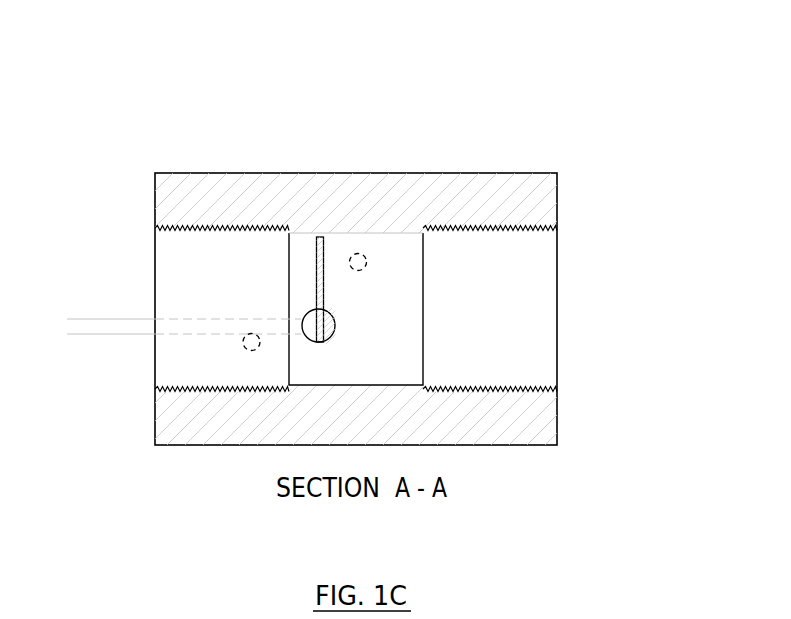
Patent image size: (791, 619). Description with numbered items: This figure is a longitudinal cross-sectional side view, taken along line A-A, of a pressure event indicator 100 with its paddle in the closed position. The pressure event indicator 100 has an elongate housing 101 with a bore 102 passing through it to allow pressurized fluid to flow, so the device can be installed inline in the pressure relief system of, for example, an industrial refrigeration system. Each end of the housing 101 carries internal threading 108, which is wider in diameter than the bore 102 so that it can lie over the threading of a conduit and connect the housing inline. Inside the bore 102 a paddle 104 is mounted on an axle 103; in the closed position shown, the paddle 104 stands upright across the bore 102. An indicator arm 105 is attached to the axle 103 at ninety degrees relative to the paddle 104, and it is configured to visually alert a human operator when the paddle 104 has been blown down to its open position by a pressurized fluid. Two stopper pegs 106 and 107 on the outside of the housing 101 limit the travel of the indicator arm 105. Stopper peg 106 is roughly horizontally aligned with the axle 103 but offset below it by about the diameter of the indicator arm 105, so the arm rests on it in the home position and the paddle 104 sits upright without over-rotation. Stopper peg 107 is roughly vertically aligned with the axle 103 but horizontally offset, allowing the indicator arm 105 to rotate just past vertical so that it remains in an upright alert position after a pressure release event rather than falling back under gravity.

The pressure event indicator 100 is at (554, 117).
The housing 101 is at (519, 433).
The bore 102 is at (393, 296).
The axle 103 is at (336, 333).
The paddle 104 is at (320, 264).
The indicator arm 105 is at (85, 318).
The stopper peg 106 is at (244, 346).
The stopper peg 107 is at (352, 251).
The internal threading 108 is at (195, 229).